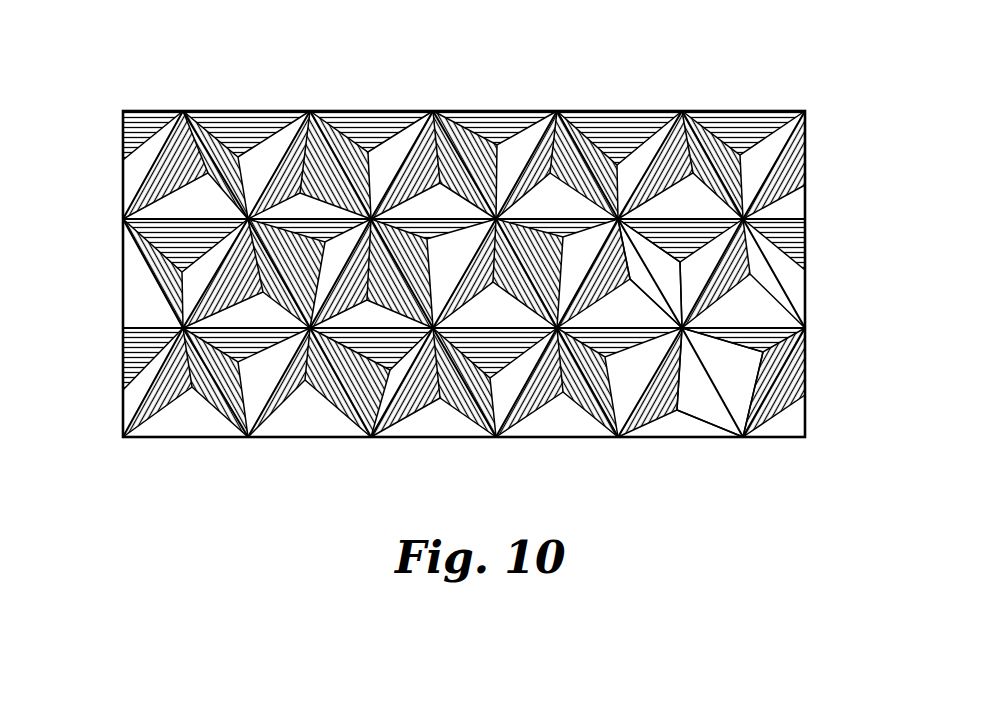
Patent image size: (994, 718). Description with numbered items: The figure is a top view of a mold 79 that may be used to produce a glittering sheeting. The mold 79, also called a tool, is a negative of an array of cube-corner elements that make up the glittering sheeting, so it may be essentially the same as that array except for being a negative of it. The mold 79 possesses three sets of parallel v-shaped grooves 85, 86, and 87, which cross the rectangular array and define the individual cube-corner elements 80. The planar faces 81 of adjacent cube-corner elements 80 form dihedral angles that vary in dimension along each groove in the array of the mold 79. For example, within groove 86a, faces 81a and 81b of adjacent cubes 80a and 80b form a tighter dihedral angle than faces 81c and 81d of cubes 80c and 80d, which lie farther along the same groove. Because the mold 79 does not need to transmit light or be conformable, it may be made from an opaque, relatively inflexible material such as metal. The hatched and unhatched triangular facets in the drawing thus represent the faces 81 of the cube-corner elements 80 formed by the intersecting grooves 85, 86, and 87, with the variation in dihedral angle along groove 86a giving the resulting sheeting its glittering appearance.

The mold 79 is at (469, 259).
The cube-corner elements 80 is at (208, 108).
The planar faces 81 is at (274, 150).
The parallel v-shaped grooves 85 is at (150, 237).
The parallel v-shaped grooves 86 is at (356, 178).
The groove 86a is at (590, 139).
The parallel v-shaped grooves 87 is at (255, 404).
The cube 80a is at (616, 326).
The cube 80b is at (716, 252).
The cube 80c is at (676, 441).
The cube 80d is at (787, 355).
The face 81a is at (648, 286).
The face 81b is at (672, 280).
The face 81c is at (713, 405).
The face 81d is at (742, 395).